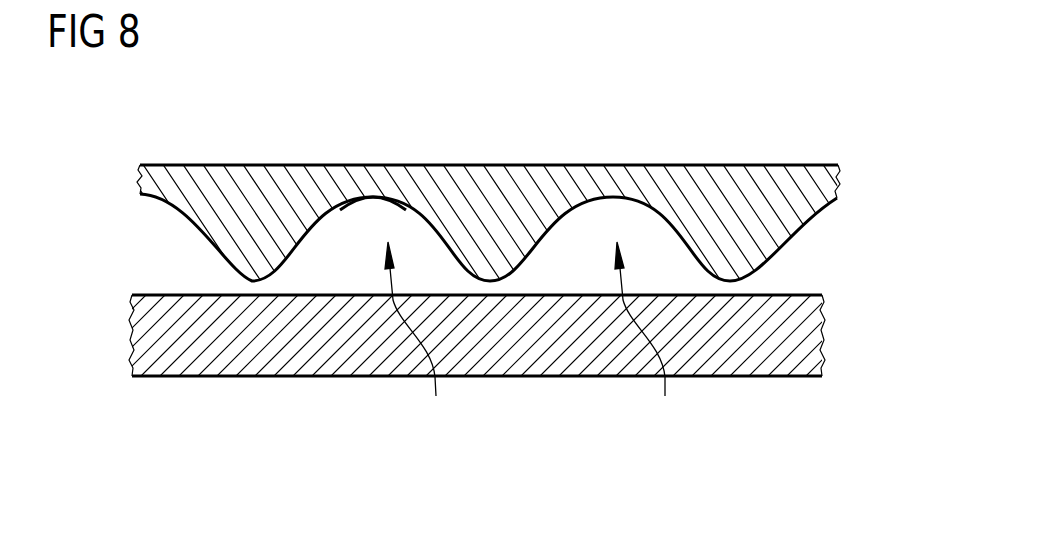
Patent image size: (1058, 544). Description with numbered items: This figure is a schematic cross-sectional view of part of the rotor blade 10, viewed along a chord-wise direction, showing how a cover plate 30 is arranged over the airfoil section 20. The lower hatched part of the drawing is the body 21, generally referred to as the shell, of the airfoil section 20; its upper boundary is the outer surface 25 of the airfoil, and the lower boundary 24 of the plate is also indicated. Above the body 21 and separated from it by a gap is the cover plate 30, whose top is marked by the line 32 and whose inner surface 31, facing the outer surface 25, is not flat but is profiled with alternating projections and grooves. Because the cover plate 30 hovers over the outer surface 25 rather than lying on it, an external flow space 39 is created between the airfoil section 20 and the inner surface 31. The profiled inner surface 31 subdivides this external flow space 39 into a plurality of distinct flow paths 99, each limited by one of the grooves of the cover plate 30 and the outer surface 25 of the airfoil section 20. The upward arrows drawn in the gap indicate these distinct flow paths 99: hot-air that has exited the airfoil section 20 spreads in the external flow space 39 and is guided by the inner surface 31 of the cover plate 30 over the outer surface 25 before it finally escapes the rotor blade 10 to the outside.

The rotor blade 10 is at (788, 118).
The airfoil section 20 is at (108, 350).
The body 21 is at (807, 332).
The lower surface of second component 24 is at (750, 378).
The outer surface 25 is at (800, 295).
The cover plate 30 is at (138, 152).
The inner surface 31 is at (375, 199).
The upper surface of first component 32 is at (480, 165).
The external flow space 39 is at (130, 256).
The distinct flow paths 99 is at (534, 335).